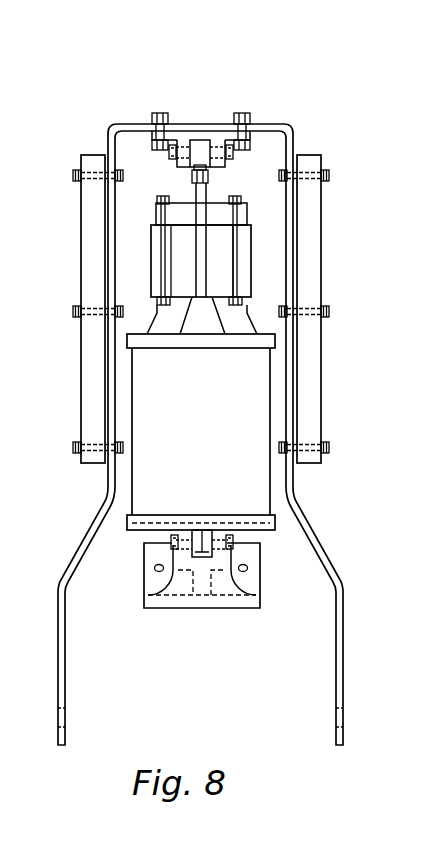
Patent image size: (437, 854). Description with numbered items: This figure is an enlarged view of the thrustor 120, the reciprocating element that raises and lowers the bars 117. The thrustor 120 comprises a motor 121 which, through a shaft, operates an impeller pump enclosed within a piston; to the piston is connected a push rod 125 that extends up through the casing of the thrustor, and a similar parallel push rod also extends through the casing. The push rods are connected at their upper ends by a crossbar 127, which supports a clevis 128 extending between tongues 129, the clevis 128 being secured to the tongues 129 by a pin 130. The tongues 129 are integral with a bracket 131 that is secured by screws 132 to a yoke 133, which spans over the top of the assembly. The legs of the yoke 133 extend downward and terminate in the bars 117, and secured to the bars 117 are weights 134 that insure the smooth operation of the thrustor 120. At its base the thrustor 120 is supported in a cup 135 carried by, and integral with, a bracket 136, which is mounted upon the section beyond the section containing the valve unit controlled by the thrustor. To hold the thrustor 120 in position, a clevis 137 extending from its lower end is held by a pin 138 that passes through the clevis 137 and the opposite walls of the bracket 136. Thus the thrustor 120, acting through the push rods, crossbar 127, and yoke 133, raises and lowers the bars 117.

The bars 117 is at (65, 643).
The thrustor 120 is at (256, 233).
The motor 121 is at (222, 265).
The push rod 125 is at (197, 250).
The crossbar 127 is at (208, 177).
The clevis 128 is at (202, 140).
The tongues 129 is at (182, 163).
The pin 130 is at (172, 144).
The bracket 131 is at (215, 133).
The screws 132 is at (156, 118).
The yoke 133 is at (108, 142).
The weights 134 is at (321, 330).
The cup 135 is at (233, 543).
The bracket 136 is at (250, 578).
The clevis 137 is at (201, 548).
The pin 138 is at (171, 542).